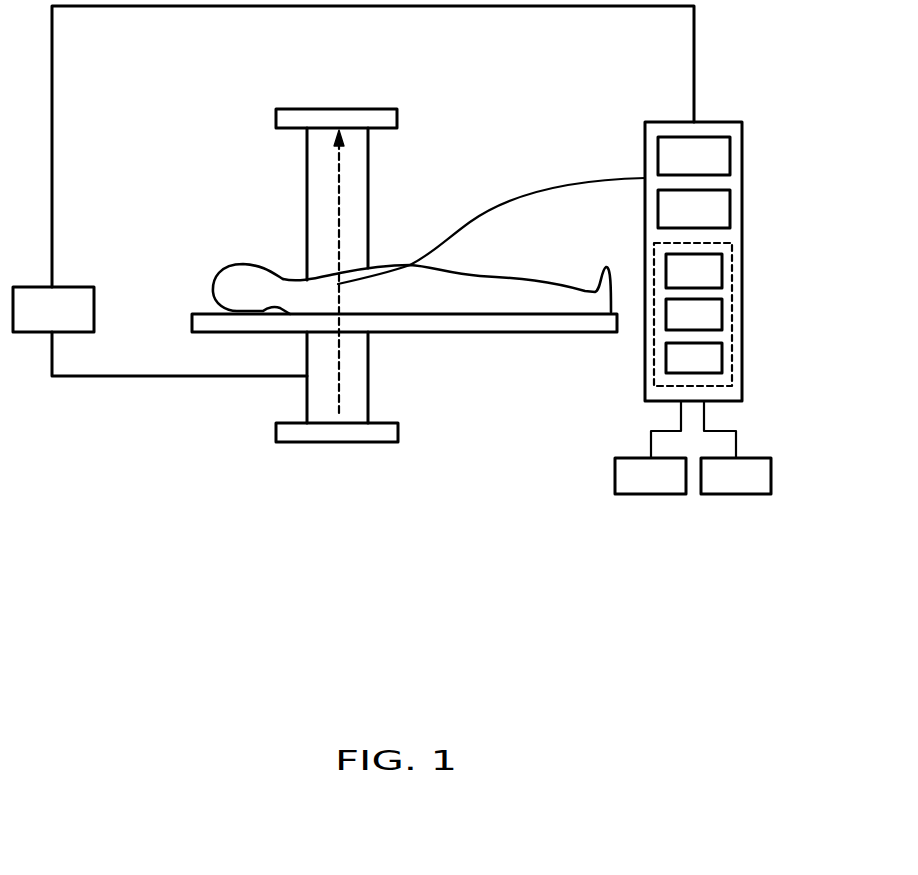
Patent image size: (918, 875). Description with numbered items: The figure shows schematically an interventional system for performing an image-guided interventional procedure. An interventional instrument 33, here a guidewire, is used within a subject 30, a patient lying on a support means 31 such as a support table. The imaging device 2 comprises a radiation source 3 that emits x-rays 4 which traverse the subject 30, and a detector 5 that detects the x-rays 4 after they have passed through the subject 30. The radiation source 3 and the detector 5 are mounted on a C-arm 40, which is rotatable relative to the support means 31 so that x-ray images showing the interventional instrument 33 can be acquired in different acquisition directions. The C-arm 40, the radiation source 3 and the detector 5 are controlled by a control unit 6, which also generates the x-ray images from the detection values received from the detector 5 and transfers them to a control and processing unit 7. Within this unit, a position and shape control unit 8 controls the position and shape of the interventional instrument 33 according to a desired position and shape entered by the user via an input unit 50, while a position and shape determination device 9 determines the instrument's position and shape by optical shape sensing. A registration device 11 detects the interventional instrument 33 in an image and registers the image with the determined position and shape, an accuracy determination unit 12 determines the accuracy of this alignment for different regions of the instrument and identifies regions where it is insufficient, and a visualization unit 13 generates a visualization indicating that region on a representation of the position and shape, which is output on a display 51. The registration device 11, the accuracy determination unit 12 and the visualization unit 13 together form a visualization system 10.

The imaging device 2 is at (86, 500).
The radiation source 3 is at (335, 443).
The x-rays 4 is at (340, 363).
The detector 5 is at (397, 118).
The control unit 6 is at (30, 335).
The control and processing unit 7 is at (727, 122).
The position and shape control unit 8 is at (730, 149).
The position and shape determination device 9 is at (730, 207).
The visualization system 10 is at (732, 253).
The registration device 11 is at (722, 271).
The accuracy determination unit 12 is at (722, 314).
The visualization unit 13 is at (722, 361).
The subject 30 is at (302, 279).
The support means 31 is at (553, 333).
The interventional instrument 33 is at (543, 183).
The C-arm 40 is at (368, 398).
The input unit 50 is at (650, 495).
The display 51 is at (735, 495).